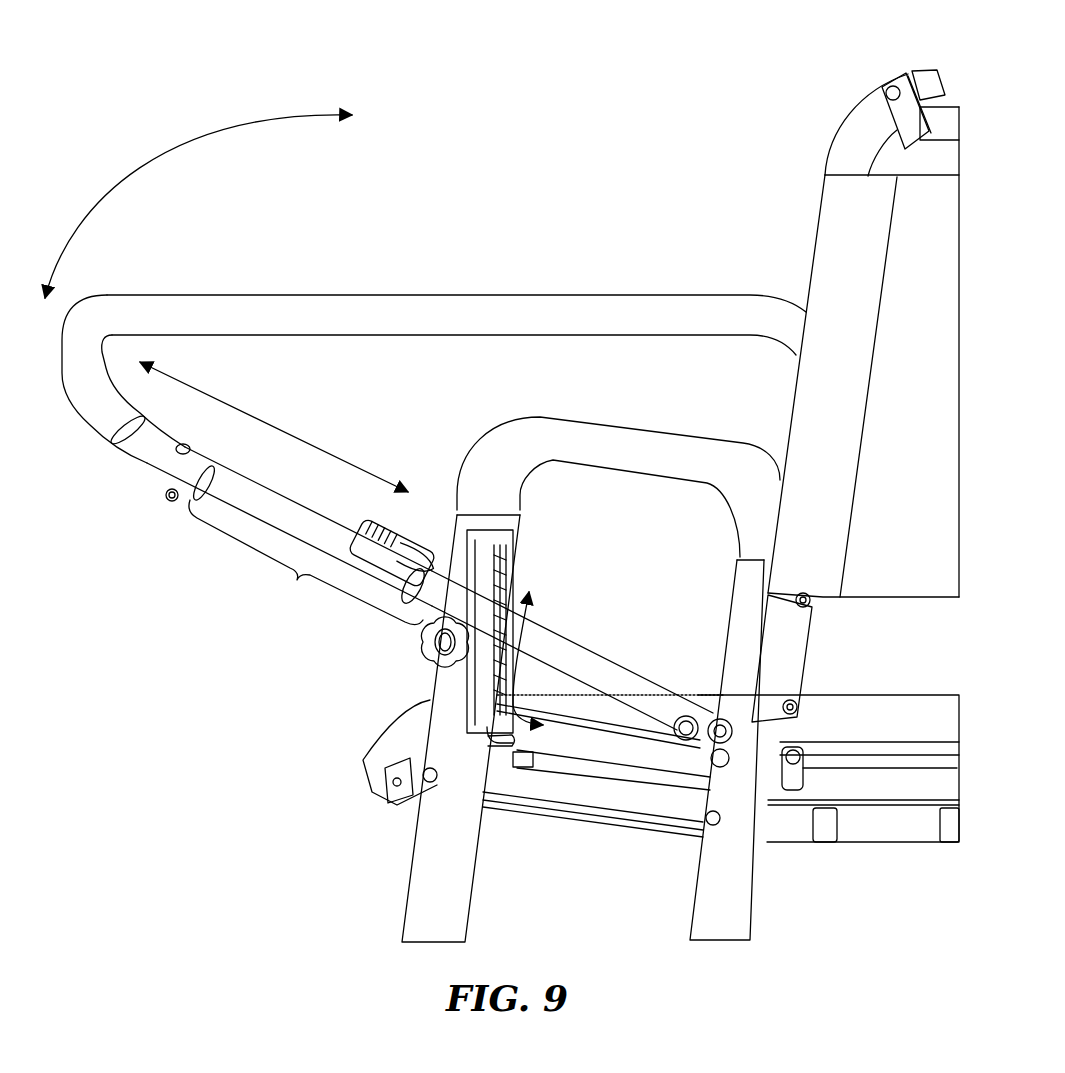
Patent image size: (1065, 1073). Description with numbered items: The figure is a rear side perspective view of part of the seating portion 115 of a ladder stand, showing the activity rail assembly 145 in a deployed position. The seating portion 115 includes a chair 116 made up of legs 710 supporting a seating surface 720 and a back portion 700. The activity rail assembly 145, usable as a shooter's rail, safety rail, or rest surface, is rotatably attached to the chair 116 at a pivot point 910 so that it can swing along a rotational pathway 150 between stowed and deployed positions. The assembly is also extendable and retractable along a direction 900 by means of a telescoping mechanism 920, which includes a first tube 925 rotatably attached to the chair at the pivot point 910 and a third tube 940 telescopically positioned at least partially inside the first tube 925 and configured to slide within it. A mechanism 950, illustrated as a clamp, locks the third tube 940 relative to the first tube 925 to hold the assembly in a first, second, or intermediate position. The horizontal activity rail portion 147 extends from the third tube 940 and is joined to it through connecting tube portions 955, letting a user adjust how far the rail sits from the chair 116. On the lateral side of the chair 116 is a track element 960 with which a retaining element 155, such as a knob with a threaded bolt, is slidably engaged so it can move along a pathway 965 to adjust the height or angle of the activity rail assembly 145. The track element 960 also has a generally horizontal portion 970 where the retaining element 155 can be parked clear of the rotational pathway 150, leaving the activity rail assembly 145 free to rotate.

The seating portion 115 is at (97, 79).
The chair 116 is at (630, 750).
The activity rail assembly 145 is at (129, 279).
The horizontal activity rail portion 147 is at (412, 312).
The rotational pathway 150 is at (133, 175).
The retaining element 155 is at (432, 657).
The back portion 700 is at (893, 434).
The legs 710 is at (457, 885).
The seating surface 720 is at (877, 713).
The direction 900 is at (263, 427).
The pivot point 910 is at (703, 713).
The telescoping mechanism 920 is at (306, 562).
The first tube 925 is at (597, 663).
The third tube 940 is at (283, 517).
The mechanism for locking 950 is at (370, 560).
The connecting tube portions 955 is at (90, 395).
The track element 960 is at (485, 550).
The pathway 965 is at (530, 600).
The generally horizontal portion 970 is at (500, 740).